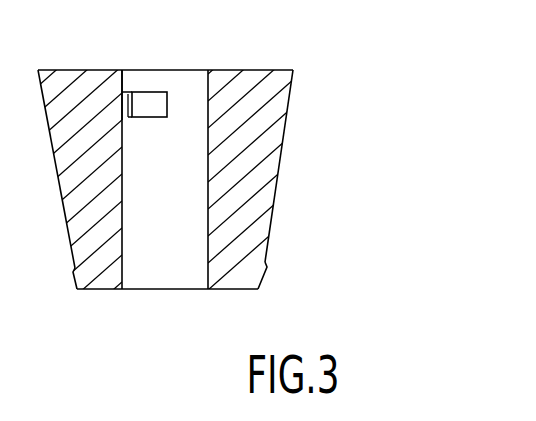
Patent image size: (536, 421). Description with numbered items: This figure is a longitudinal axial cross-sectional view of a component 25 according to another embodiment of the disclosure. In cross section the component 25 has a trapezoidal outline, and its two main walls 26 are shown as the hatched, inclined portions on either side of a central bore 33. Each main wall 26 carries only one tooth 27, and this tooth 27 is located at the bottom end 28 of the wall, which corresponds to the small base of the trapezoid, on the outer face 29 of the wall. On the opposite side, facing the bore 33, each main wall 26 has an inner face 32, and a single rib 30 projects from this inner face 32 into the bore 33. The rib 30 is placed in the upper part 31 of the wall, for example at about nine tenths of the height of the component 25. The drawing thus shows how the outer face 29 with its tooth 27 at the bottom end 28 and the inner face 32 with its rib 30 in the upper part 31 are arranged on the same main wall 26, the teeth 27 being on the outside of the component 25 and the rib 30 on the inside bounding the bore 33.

The component 25 is at (306, 109).
The main walls 26 is at (72, 133).
The tooth 27 is at (73, 269).
The bottom end 28 is at (179, 293).
The outer face 29 is at (266, 233).
The rib 30 is at (131, 98).
The upper part 31 is at (110, 97).
The inner face 32 is at (127, 162).
The bore 33 is at (185, 92).